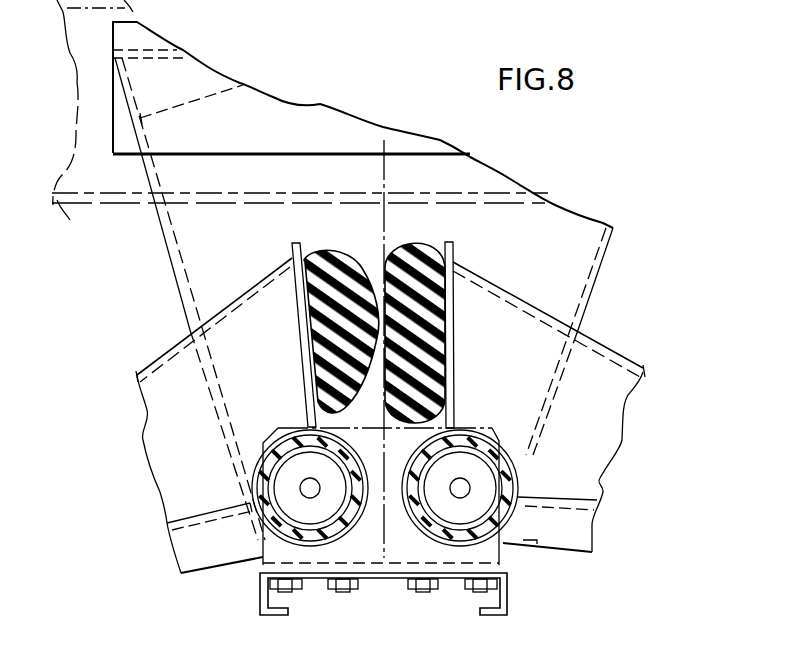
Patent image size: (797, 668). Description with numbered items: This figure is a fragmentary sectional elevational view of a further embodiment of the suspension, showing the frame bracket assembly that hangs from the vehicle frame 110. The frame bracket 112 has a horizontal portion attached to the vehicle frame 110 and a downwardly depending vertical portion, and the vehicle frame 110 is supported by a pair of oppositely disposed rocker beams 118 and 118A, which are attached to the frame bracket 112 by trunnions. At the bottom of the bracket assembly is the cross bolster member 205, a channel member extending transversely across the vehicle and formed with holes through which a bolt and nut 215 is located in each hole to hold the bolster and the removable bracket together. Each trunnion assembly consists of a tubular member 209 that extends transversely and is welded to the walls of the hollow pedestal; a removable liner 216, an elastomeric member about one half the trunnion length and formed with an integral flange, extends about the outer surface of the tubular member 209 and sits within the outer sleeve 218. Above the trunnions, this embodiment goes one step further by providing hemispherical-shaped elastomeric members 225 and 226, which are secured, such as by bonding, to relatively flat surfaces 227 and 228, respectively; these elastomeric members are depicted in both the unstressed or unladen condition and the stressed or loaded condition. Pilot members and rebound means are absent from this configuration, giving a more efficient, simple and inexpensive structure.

The vehicle frame 110 is at (79, 193).
The frame bracket 112 is at (267, 114).
The rocker beam 118 is at (198, 556).
The rocker beam 118A is at (582, 540).
The cross bolster member 205 is at (508, 606).
The tubular member 209 is at (484, 482).
The bolt and nut 215 is at (413, 588).
The removable liner 216 is at (490, 449).
The outer sleeve 218 is at (471, 427).
The hemispherical-shaped elastomeric member 225 is at (330, 262).
The hemispherical-shaped elastomeric member 226 is at (430, 244).
The relatively flat surface 227 is at (297, 329).
The relatively flat surface 228 is at (454, 331).